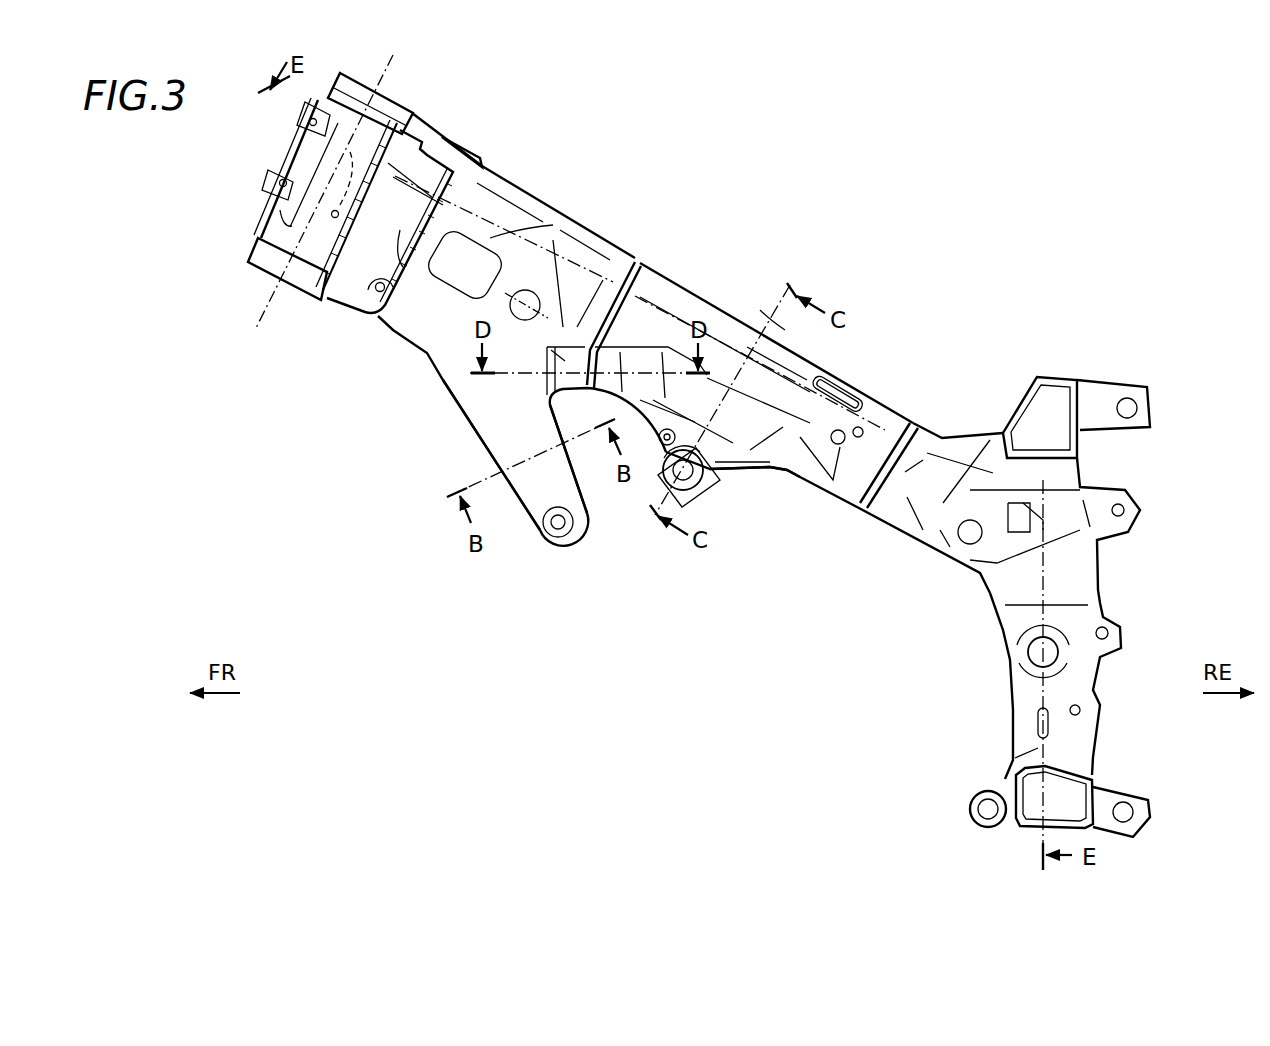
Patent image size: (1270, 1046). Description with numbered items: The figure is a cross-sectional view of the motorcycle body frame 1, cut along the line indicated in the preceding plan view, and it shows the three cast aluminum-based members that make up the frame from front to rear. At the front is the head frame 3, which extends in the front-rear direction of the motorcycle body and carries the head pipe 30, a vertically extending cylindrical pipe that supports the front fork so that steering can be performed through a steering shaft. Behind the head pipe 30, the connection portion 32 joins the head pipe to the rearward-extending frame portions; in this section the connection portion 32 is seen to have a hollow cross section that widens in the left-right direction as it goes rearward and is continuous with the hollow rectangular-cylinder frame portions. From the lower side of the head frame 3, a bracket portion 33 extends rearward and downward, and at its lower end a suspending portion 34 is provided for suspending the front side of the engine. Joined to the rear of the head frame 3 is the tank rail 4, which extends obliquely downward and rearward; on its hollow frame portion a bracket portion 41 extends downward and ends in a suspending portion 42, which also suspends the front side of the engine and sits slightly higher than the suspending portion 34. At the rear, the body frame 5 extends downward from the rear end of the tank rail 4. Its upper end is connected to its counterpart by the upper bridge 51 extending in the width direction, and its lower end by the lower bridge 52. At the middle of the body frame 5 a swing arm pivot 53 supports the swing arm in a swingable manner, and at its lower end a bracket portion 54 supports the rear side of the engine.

The motorcycle body frame 1 is at (966, 143).
The head frame 3 is at (530, 200).
The tank rail 4 is at (725, 330).
The body frame 5 is at (970, 445).
The head pipe 30 is at (257, 252).
The connection portion 32 is at (397, 305).
The bracket portion 33 is at (480, 423).
The suspending portion 34 is at (552, 540).
The bracket portion 41 is at (748, 470).
The suspending portion 42 is at (705, 478).
The upper bridge 51 is at (1050, 378).
The lower bridge 52 is at (1060, 772).
The swing arm pivot 53 is at (1027, 650).
The bracket portion 54 is at (978, 794).